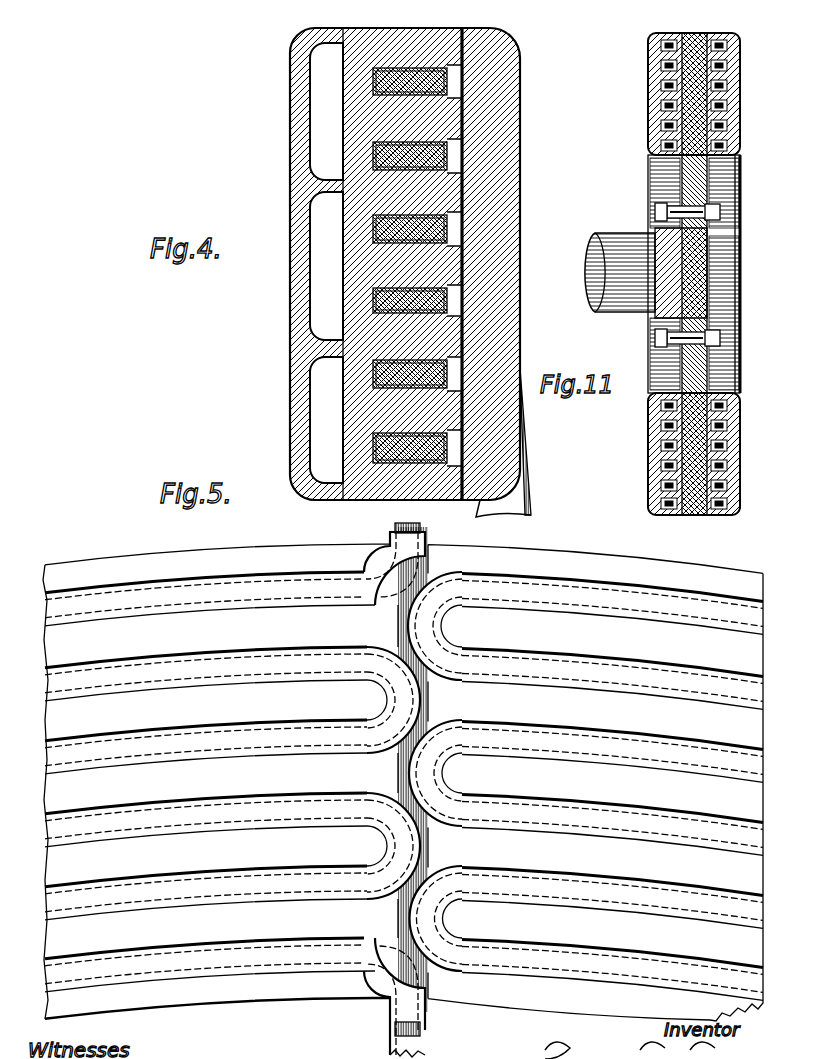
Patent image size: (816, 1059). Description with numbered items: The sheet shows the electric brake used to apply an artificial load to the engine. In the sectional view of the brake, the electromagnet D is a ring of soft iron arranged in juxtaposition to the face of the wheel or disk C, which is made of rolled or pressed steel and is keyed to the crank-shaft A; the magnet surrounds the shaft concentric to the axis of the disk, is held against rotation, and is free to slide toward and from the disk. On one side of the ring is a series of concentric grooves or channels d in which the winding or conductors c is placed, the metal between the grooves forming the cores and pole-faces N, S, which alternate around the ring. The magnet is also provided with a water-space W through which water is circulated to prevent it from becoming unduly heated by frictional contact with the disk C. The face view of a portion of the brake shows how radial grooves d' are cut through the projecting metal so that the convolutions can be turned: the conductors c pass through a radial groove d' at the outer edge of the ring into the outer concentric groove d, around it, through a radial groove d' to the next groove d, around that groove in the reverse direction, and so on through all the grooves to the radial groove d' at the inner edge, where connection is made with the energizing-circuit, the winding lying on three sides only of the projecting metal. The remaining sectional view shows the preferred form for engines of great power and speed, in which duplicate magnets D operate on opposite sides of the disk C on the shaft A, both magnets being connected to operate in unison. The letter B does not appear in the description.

In FIG. 4, the field magnet casing B is at (358, 264).
In FIG. 4, the disk C is at (520, 62).
In FIG. 11, the disk C is at (742, 182).
In FIG. 4, the water-space W is at (326, 263).
In FIG. 4, the north pole-face N is at (417, 271).
In FIG. 5, the north pole-face N is at (406, 787).
In FIG. 4, the south pole-face S is at (417, 290).
In FIG. 5, the south pole-face S is at (430, 776).
In FIG. 4, the conductors c is at (453, 195).
In FIG. 5, the conductors c is at (431, 530).
In FIG. 11, the crank-shaft A is at (592, 270).
In FIG. 11, the electromagnet D is at (648, 102).
In FIG. 5, the concentric grooves d is at (404, 767).
In FIG. 5, the radial grooves d' is at (411, 769).